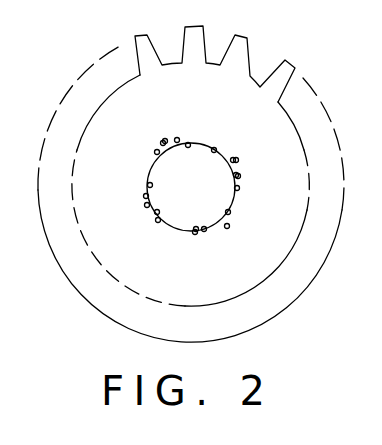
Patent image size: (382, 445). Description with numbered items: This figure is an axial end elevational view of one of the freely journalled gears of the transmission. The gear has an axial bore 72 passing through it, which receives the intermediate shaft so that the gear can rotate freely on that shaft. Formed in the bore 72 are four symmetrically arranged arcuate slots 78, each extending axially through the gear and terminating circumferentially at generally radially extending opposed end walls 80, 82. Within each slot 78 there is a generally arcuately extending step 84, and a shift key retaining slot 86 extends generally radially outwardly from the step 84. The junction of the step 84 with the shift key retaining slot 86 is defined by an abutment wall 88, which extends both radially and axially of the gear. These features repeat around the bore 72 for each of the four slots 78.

The axial bore 72 is at (215, 148).
The arcuate slot 78 is at (228, 167).
The end wall 80 is at (232, 157).
The end wall 82 is at (189, 143).
The step 84 is at (165, 139).
The shift key retaining slot 86 is at (161, 142).
The abutment wall 88 is at (177, 138).